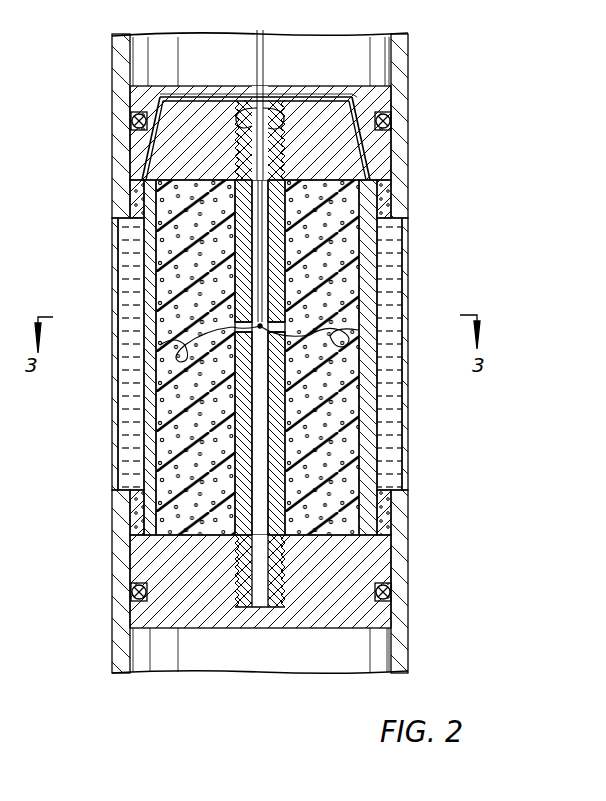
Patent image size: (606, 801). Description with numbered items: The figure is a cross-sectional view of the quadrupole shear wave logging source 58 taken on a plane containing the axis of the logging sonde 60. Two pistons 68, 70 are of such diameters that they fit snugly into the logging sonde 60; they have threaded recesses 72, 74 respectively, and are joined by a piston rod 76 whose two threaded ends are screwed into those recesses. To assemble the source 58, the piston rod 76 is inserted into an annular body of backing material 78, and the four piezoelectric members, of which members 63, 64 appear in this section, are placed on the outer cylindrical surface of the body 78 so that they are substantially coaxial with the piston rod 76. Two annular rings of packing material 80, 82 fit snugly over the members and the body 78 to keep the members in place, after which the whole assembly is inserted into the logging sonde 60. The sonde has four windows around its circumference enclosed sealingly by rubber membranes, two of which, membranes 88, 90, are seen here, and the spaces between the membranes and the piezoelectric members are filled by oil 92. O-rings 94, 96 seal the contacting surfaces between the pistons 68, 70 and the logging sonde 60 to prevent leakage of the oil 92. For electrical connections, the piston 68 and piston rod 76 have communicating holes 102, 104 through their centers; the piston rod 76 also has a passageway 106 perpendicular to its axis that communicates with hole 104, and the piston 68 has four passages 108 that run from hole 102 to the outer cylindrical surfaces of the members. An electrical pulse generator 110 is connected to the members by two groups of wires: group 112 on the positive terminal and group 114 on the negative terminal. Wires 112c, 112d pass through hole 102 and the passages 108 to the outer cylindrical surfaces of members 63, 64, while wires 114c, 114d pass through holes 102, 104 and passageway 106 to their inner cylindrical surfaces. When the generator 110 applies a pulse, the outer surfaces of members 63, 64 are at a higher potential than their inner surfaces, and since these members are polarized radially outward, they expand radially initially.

The quadrupole shear wave logging source 58 is at (84, 110).
The logging sonde 60 is at (398, 87).
The piezoelectric member 63 is at (150, 206).
The piezoelectric member 64 is at (380, 223).
The piston 68 is at (378, 106).
The piston 70 is at (375, 559).
The threaded recess 72 is at (283, 131).
The threaded recess 74 is at (283, 610).
The piston rod 76 is at (186, 256).
The annular body of backing material 78 is at (335, 263).
The annular ring of packing material 80 is at (133, 188).
The annular ring of packing material 82 is at (138, 521).
The rubber membrane 88 is at (118, 345).
The rubber membrane 90 is at (400, 370).
The oil 92 is at (128, 428).
The O-ring 94 is at (392, 128).
The O-ring 96 is at (393, 593).
The hole 102 is at (263, 85).
The hole 104 is at (250, 128).
The passageway 106 is at (232, 327).
The passages 108 is at (332, 97).
The electrical pulse generator 110 is at (280, 49).
The group of wires 112 is at (255, 58).
The wire 112c is at (147, 153).
The wire 112d is at (382, 153).
The group of wires 114 is at (265, 58).
The wire 114c is at (185, 352).
The wire 114d is at (330, 336).